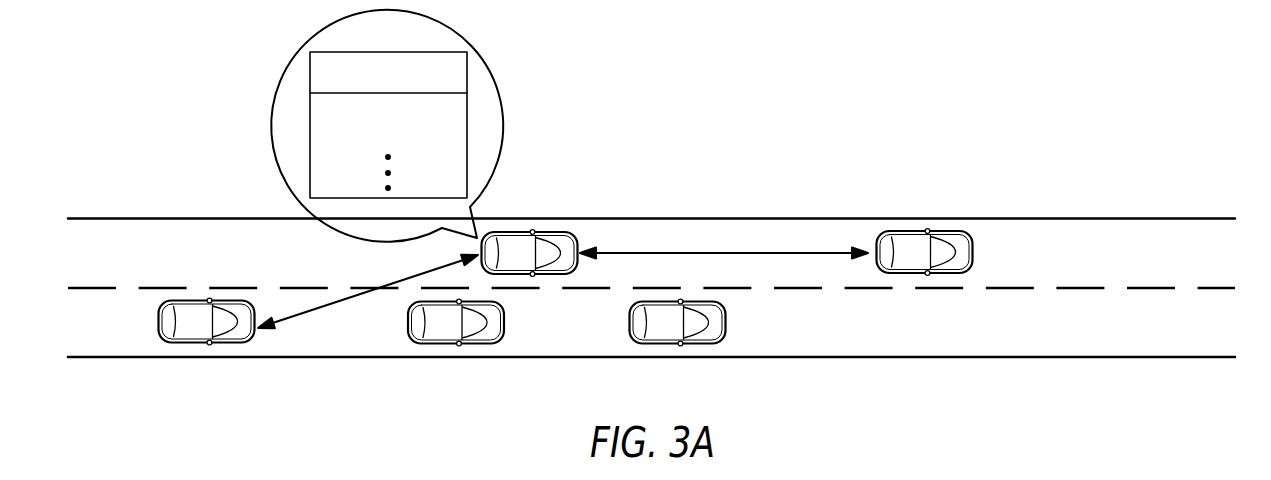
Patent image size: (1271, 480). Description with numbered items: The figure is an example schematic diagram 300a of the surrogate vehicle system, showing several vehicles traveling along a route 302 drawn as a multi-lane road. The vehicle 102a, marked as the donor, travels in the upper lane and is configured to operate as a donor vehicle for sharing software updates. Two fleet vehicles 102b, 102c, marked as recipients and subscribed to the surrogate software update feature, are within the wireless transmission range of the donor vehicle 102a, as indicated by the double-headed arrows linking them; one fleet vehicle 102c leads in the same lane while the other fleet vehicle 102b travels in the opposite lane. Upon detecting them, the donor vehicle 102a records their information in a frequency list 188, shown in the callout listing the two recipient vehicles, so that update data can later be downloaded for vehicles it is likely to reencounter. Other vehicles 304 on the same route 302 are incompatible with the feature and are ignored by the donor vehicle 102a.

The frequency list 188 is at (470, 79).
The vehicle 102a is at (548, 233).
The fleet vehicle 102b is at (195, 343).
The fleet vehicle 102c is at (945, 232).
The route 302 is at (1185, 218).
The other vehicles 304 is at (443, 344).
The schematic diagram 300a is at (1090, 401).